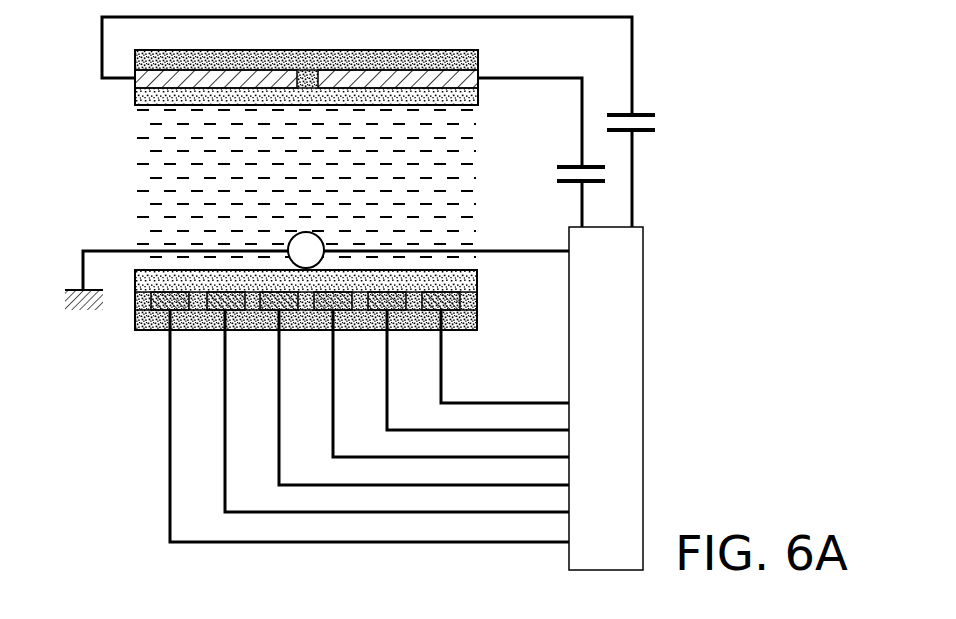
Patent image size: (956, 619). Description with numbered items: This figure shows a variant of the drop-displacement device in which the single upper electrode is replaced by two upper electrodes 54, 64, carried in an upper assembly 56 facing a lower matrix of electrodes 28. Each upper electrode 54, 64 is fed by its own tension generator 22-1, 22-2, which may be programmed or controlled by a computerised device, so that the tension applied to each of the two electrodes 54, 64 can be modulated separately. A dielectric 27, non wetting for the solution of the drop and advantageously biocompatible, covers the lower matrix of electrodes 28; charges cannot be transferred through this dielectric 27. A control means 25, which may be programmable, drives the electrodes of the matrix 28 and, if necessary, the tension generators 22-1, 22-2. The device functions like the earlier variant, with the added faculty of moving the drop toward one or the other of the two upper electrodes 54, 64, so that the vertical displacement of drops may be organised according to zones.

The upper electrode assembly 56 is at (135, 95).
The upper electrode 54 is at (190, 76).
The upper electrode 64 is at (363, 78).
The tension generator 22-1 is at (567, 183).
The tension generator 22-2 is at (648, 133).
The control means 25 is at (627, 357).
The dielectric 27 is at (478, 282).
The lower matrix of electrodes 28 is at (134, 317).